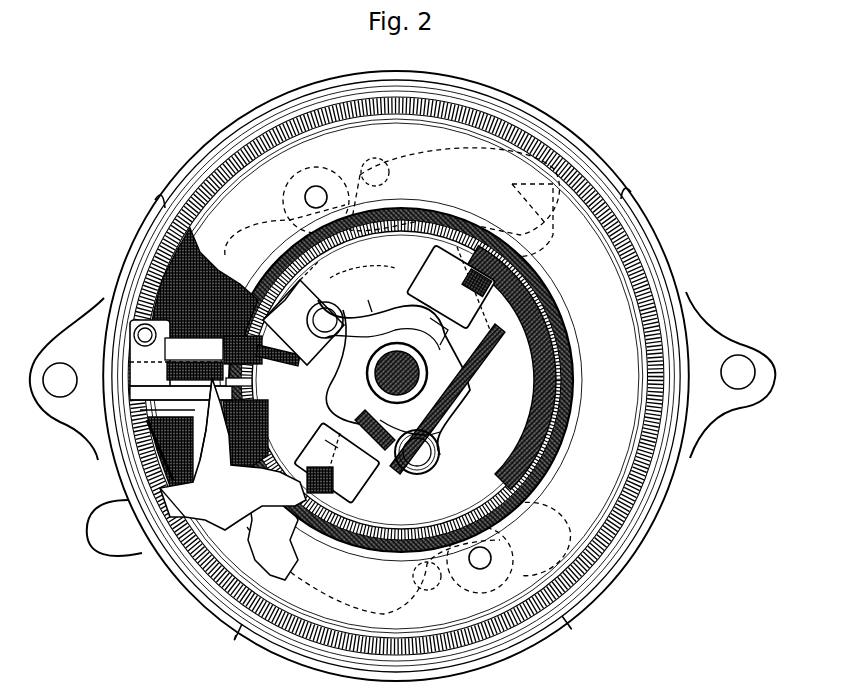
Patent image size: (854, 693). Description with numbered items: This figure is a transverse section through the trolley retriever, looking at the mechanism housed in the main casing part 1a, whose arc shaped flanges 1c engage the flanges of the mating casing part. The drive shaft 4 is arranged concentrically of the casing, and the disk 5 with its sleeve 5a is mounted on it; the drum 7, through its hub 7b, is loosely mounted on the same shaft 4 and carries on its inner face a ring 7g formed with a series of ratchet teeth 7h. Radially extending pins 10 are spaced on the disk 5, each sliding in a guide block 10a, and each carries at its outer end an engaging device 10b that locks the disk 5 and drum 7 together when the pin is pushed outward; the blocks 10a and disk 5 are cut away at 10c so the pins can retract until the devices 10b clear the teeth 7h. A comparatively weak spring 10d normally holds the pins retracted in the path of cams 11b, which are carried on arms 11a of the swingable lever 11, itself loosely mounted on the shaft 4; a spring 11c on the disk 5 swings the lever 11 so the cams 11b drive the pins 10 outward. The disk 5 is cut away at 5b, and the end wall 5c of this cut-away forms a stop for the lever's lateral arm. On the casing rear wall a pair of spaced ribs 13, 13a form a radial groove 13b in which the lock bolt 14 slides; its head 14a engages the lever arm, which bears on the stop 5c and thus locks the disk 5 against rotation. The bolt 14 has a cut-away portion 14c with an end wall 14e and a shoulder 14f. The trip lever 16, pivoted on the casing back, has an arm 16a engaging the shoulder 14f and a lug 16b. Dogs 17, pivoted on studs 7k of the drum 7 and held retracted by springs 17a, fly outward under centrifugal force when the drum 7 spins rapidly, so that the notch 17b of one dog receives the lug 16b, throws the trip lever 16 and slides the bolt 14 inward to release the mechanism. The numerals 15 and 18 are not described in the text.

The main casing part 1a is at (208, 142).
The arc shaped flange 1c is at (127, 265).
The drive shaft 4 is at (380, 365).
The disk 5 is at (331, 305).
The sleeve 5a is at (268, 312).
The cut-away portion 5b is at (362, 273).
The end wall 5c is at (338, 252).
The drum 7 is at (396, 376).
The hub 7b is at (438, 413).
The ring 7g is at (566, 332).
The ratchet teeth 7h is at (556, 426).
The pin or stud 7k is at (314, 194).
The radially extending pin 10 is at (460, 262).
The guide block 10a is at (326, 444).
The engaging device 10b is at (413, 365).
The cut-away 10c is at (482, 282).
The spring 10d is at (369, 297).
The swingable lever 11 is at (312, 384).
The arm 11a is at (470, 382).
The cam 11b is at (447, 333).
The spring 11c is at (442, 450).
The rib 13 is at (208, 360).
The rib 13a is at (133, 403).
The groove 13b is at (130, 397).
The lock member or bolt 14 is at (130, 395).
The head 14a is at (140, 362).
The cut-away portion 14c is at (200, 381).
The end wall 14e is at (252, 371).
The shoulder or projection 14f is at (252, 386).
The pivot stud 15 is at (307, 318).
The trip or bolt throwing device 16 is at (233, 454).
The arm 16a is at (228, 445).
The lug 16b is at (186, 528).
The dog 17 is at (448, 150).
The spring 17a is at (372, 160).
The notch 17b is at (520, 222).
The screw 18 is at (135, 378).